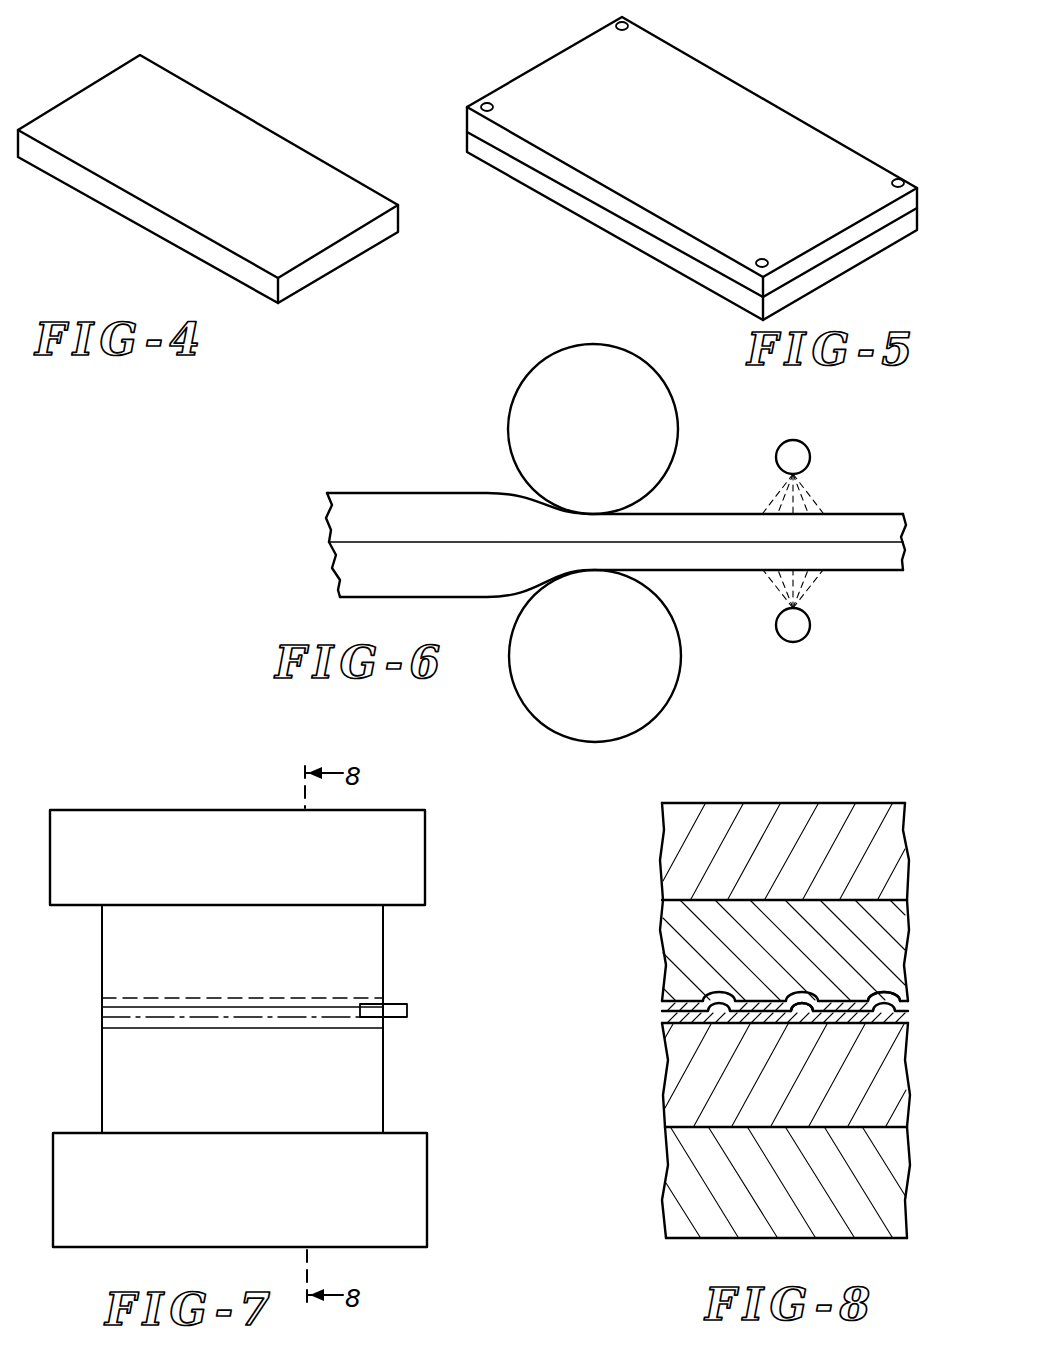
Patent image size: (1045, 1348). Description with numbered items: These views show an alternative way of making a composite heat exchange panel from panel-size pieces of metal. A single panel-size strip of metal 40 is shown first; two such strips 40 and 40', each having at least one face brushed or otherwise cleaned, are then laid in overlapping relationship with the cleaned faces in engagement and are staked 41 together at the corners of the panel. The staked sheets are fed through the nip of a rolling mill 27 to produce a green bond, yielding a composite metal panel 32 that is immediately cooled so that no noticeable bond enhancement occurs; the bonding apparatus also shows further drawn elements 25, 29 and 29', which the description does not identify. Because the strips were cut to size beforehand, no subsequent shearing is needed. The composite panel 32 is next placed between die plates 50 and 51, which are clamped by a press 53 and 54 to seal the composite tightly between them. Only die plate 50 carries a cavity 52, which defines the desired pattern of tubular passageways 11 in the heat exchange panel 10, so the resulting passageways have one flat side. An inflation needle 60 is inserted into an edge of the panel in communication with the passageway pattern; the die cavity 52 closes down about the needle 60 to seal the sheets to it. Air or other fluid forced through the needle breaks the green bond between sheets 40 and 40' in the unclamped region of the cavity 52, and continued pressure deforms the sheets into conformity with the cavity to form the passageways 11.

In FIG. 8, the heat exchange panel 10 is at (870, 1000).
In FIG. 8, the tubular passageways 11 is at (805, 1005).
In FIG. 6, the lower roller 25 is at (678, 462).
In FIG. 6, the rolling mill 27 is at (652, 351).
In FIG. 6, the upper heat source 29 is at (815, 467).
In FIG. 6, the lower heat source 29' is at (818, 609).
In FIG. 6, the composite metal panel 32 is at (877, 513).
In FIG. 4, the strip of metal 40 is at (208, 179).
In FIG. 5, the strip of metal 40 is at (692, 157).
In FIG. 6, the strip of metal 40 is at (614, 498).
In FIG. 5, the strip of metal 40' is at (699, 226).
In FIG. 6, the strip of metal 40' is at (595, 583).
In FIG. 5, the stake 41 is at (630, 26).
In FIG. 7, the die plate 50 is at (383, 950).
In FIG. 8, the die plate 50 is at (662, 957).
In FIG. 7, the die plate 51 is at (385, 1090).
In FIG. 8, the die plate 51 is at (665, 1093).
In FIG. 7, the cavity 52 is at (383, 1000).
In FIG. 8, the cavity 52 is at (735, 998).
In FIG. 7, the press 53 is at (425, 865).
In FIG. 8, the press 53 is at (662, 857).
In FIG. 7, the press 54 is at (427, 1188).
In FIG. 8, the press 54 is at (665, 1190).
In FIG. 7, the inflation needle 60 is at (407, 1007).